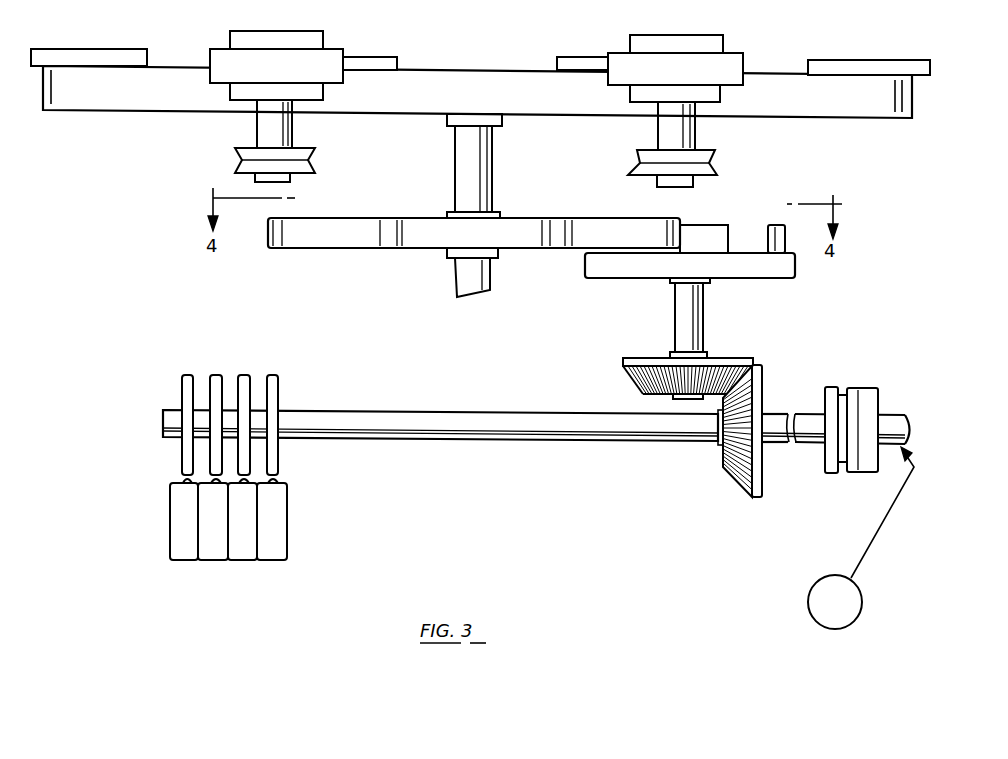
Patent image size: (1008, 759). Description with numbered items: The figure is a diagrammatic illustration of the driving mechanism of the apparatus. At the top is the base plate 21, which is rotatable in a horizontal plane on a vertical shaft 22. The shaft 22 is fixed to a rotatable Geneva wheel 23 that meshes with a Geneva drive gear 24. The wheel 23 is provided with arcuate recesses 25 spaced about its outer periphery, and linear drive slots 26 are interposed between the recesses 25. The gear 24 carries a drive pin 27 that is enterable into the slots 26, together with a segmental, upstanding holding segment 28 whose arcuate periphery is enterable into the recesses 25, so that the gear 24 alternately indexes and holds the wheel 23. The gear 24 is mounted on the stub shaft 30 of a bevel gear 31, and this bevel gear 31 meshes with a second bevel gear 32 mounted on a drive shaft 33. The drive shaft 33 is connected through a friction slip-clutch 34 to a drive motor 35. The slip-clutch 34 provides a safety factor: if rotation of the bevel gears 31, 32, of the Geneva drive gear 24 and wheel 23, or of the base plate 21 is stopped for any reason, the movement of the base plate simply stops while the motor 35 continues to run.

The base plate 21 is at (457, 82).
The vertical shaft 22 is at (454, 166).
The Geneva wheel 23 is at (368, 218).
The Geneva drive gear 24 is at (765, 268).
The arcuate recesses 25 is at (503, 234).
The linear drive slots 26 is at (556, 232).
The drive pin 27 is at (775, 228).
The holding segment 28 is at (708, 236).
The stub shaft 30 is at (709, 318).
The bevel gear 31 is at (650, 377).
The second bevel gear 32 is at (733, 478).
The drive shaft 33 is at (497, 427).
The friction slip-clutch 34 is at (859, 380).
The drive motor 35 is at (835, 630).